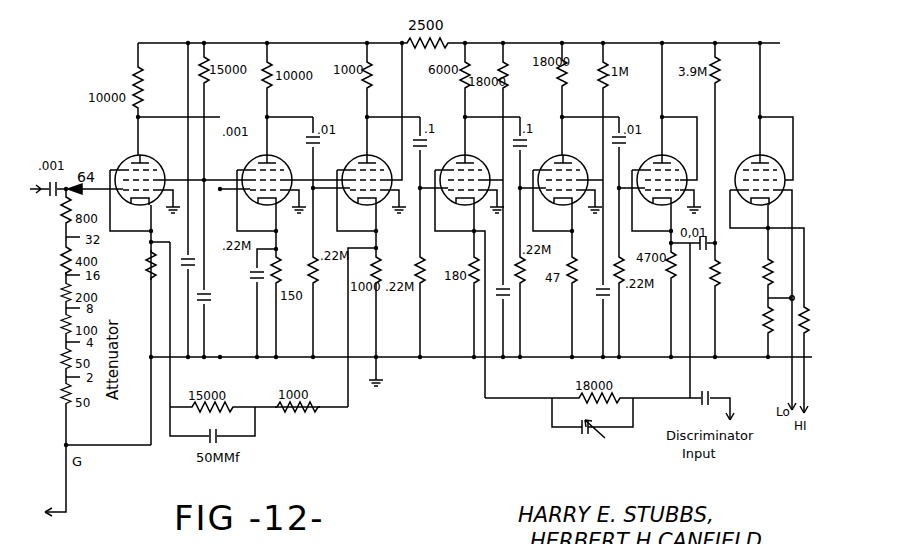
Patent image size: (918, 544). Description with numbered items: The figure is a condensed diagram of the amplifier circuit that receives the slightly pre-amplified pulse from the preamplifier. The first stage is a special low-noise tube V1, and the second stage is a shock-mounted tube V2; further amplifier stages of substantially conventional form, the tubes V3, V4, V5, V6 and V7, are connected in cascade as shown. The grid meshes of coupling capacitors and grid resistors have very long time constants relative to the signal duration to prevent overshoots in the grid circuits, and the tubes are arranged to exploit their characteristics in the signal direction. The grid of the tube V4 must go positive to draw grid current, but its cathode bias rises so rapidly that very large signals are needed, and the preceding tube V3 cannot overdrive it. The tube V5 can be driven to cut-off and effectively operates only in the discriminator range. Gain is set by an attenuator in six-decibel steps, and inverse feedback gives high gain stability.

The low-noise 5963 tube V1 is at (178, 297).
The shock-mounted 6AH6 tube V2 is at (285, 251).
The 6AC7 tube V3 is at (359, 274).
The 6AG7 tube V4 is at (462, 270).
The 6AC7 tube V5 is at (561, 249).
The amplifier stage tube V6 is at (667, 268).
The amplifier stage tube V7 is at (769, 276).